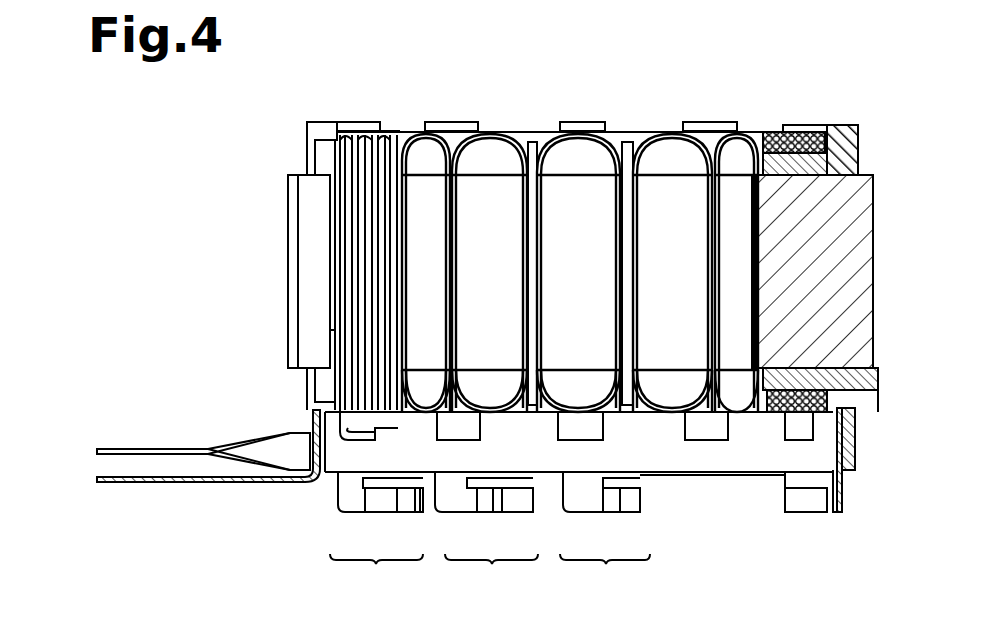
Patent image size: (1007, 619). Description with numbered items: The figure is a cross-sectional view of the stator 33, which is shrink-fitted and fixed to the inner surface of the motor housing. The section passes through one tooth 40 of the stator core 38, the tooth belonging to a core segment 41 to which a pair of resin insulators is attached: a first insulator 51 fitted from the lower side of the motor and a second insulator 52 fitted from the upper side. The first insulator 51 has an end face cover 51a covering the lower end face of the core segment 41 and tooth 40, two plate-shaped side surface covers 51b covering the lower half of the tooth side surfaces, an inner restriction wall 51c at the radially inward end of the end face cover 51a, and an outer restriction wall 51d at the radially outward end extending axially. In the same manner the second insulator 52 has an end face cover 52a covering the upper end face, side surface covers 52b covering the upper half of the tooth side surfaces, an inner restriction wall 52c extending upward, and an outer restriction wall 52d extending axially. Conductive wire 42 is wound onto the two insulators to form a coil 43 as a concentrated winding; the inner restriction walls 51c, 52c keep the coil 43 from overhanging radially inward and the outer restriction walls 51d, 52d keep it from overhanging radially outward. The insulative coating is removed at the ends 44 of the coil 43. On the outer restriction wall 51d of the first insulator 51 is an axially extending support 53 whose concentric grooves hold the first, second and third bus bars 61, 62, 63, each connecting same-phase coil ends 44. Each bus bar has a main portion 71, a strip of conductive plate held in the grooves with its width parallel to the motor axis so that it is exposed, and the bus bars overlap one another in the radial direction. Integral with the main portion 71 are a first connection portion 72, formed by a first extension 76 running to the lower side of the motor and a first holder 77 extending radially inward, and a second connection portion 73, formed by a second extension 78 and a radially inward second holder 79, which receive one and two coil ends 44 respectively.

The stator 33 is at (218, 142).
The stator core 38 is at (865, 215).
The tooth 40 is at (665, 188).
The core segment 41 is at (874, 262).
The conductive wire 42 is at (812, 124).
The coil 43 is at (354, 126).
The ends of coil 44 is at (342, 448).
The first insulator 51 is at (316, 392).
The end face cover 51a is at (836, 390).
The side surface cover 51b is at (330, 328).
The inner restriction wall 51c is at (512, 412).
The outer restriction wall 51d is at (846, 408).
The second insulator 52 is at (306, 128).
The end face cover 52a is at (850, 170).
The side surface cover 52b is at (318, 213).
The inner restriction wall 52c is at (500, 152).
The outer restriction wall 52d is at (868, 130).
The support 53 is at (850, 434).
The first bus bar 61 is at (188, 448).
The second bus bar 62 is at (176, 483).
The third bus bar 63 is at (845, 472).
The main portion 71 is at (663, 462).
The first connection portion 72 is at (490, 575).
The second connection portion 73 is at (491, 575).
The first extension 76 is at (352, 505).
The first holder 77 is at (410, 502).
The second extension 78 is at (462, 505).
The second holder 79 is at (515, 505).